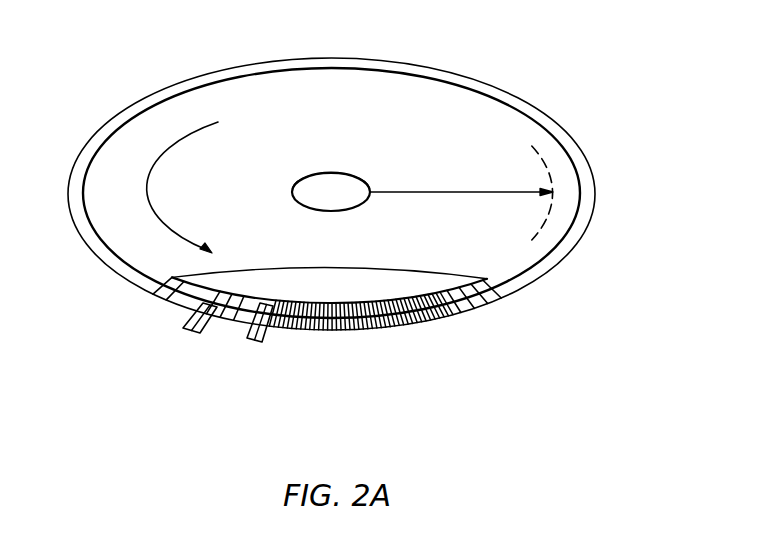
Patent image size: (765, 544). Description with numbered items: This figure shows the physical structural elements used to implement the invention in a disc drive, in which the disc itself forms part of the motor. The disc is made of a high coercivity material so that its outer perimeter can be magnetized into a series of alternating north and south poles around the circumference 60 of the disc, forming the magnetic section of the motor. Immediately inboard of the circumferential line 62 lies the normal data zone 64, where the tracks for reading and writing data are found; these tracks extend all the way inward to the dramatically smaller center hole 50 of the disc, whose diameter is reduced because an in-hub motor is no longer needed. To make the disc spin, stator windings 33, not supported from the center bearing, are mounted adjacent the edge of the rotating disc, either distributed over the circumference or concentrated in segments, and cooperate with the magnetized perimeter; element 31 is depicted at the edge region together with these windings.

The circumference of the disc 60 is at (375, 58).
The data zone 64 is at (513, 128).
The circumferential line 62 is at (553, 167).
The center hole 50 is at (339, 188).
The tab / segment 31 is at (168, 295).
The stator windings 33 is at (234, 316).